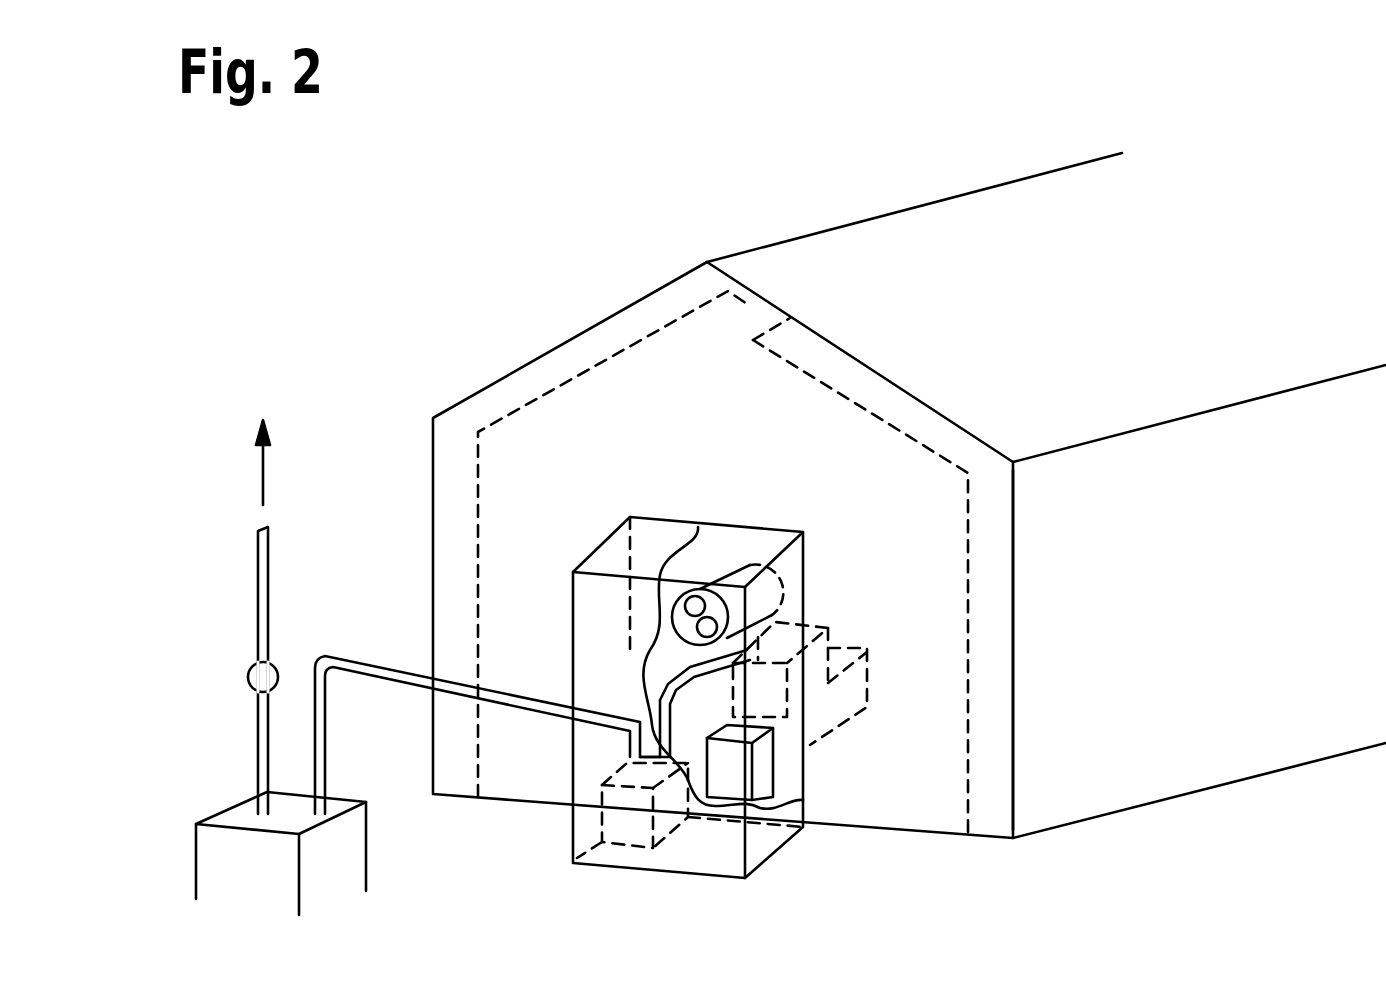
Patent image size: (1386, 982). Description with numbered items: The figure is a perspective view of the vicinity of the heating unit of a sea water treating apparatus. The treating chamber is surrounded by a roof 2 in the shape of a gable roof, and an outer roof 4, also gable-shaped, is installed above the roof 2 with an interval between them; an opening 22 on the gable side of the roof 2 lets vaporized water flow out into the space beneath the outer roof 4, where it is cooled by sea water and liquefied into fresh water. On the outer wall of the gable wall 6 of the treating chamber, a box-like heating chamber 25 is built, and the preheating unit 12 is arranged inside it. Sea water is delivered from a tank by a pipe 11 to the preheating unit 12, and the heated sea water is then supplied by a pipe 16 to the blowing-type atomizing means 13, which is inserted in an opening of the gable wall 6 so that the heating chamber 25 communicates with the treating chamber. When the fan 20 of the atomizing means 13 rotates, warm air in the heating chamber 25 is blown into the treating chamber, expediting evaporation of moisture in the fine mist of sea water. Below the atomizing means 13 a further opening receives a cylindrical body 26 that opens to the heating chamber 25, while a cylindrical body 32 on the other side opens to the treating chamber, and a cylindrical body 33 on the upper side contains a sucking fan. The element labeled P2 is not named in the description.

The roof 2 is at (932, 452).
The outer roof 4 is at (860, 372).
The gable wall 6 is at (945, 732).
The pipe 11 is at (374, 664).
The preheating unit 12 is at (630, 843).
The atomizing means 13 is at (737, 572).
The pipe 16 is at (683, 682).
The fan 20 is at (685, 614).
The opening 22 is at (725, 315).
The heating chamber 25 is at (697, 530).
The cylindrical body 26 is at (767, 788).
The cylindrical body 32 is at (870, 700).
The cylindrical body 33 is at (810, 630).
The pump P2 is at (250, 675).